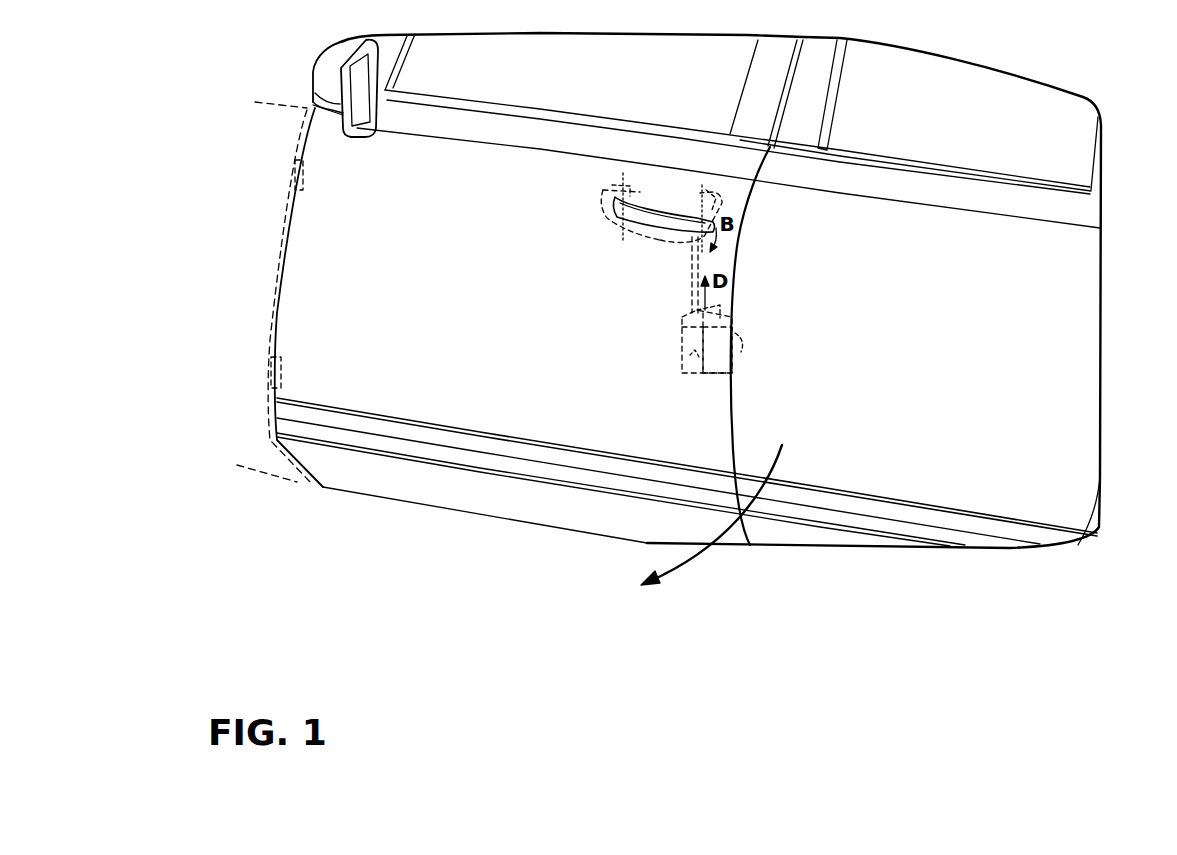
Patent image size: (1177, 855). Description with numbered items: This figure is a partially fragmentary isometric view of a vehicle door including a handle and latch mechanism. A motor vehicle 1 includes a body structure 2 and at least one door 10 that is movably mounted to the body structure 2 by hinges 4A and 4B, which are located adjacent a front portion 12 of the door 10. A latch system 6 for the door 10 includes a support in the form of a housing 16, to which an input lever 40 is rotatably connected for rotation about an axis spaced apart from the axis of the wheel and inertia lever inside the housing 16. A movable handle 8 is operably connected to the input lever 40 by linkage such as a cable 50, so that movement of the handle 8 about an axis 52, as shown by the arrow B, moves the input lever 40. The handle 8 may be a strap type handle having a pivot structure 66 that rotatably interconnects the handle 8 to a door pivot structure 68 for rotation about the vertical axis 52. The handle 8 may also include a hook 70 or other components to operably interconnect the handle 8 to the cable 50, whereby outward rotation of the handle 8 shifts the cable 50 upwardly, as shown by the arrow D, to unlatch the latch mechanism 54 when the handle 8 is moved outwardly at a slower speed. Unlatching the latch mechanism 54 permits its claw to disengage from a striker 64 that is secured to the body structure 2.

The motor vehicle 1 is at (1073, 308).
The body structure 2 is at (265, 393).
The hinge 4A is at (292, 172).
The hinge 4B is at (268, 372).
The latch system 6 is at (732, 287).
The handle 8 is at (660, 224).
The door 10 is at (305, 272).
The front portion 12 is at (302, 148).
The housing 16 is at (723, 306).
The input lever 40 is at (687, 347).
The cable 50 is at (688, 288).
The axis 52 is at (605, 175).
The latch mechanism 54 is at (733, 326).
The striker 64 is at (740, 342).
The pivot structure 66 is at (603, 212).
The door pivot structure 68 is at (605, 191).
The hook 70 is at (723, 192).